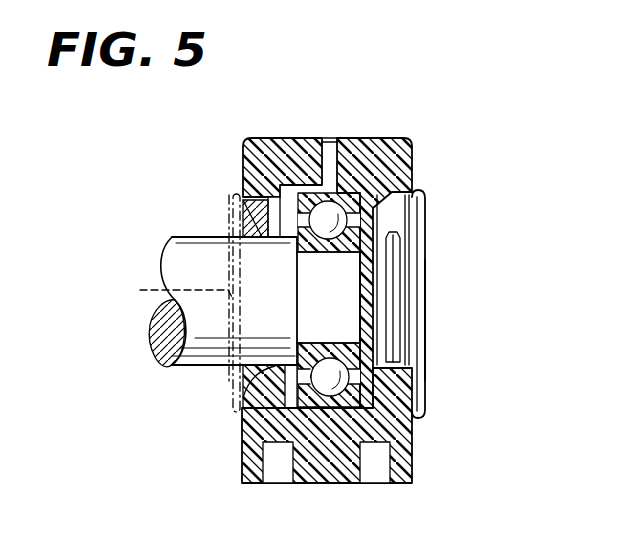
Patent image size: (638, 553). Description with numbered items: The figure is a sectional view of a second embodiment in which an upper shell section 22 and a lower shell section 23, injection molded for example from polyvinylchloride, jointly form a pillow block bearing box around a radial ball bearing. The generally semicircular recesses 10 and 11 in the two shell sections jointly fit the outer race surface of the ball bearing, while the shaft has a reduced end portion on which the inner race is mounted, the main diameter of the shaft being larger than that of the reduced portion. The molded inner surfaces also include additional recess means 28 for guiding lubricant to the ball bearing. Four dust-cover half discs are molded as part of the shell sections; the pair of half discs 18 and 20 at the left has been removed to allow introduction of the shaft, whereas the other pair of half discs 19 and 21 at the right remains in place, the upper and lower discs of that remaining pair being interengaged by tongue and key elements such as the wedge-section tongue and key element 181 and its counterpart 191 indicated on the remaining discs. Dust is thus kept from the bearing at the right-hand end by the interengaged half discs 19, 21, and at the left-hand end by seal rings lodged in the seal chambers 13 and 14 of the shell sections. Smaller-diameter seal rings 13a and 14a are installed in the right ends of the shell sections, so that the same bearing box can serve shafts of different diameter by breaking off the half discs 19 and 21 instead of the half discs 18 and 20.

The semicircular recess 10 is at (387, 220).
The semicircular recess 11 is at (418, 393).
The seal recess 13 is at (262, 232).
The seal ring 13a is at (405, 238).
The seal recess 14 is at (240, 415).
The seal ring 14a is at (395, 342).
The half disc 18 is at (228, 223).
The tongue and key element 181 is at (167, 289).
The half disc 19 is at (426, 250).
The bearing 191 is at (425, 300).
The half disc 20 is at (228, 380).
The half disc 21 is at (426, 322).
The upper shell section 22 is at (268, 147).
The lower shell section 23 is at (243, 438).
The recess means 28 is at (332, 158).